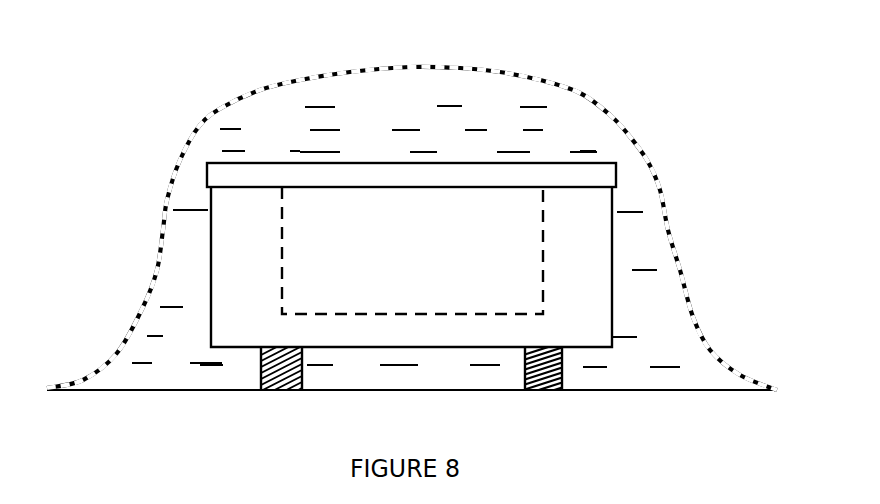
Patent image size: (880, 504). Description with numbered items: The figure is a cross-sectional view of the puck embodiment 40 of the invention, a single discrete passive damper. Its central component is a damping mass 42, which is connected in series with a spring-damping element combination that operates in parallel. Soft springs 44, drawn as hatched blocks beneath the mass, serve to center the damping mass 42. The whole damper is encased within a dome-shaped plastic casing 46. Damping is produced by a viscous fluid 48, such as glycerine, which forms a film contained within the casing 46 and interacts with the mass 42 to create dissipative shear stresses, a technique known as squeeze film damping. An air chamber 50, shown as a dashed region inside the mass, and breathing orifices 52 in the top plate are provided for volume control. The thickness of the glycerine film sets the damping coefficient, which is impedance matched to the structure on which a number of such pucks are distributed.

The puck embodiment 40 is at (538, 70).
The damping mass 42 is at (567, 210).
The soft springs 44 is at (278, 383).
The plastic casing 46 is at (223, 108).
The viscous fluid 48 is at (295, 122).
The air chamber 50 is at (373, 238).
The breathing orifices 52 is at (388, 174).